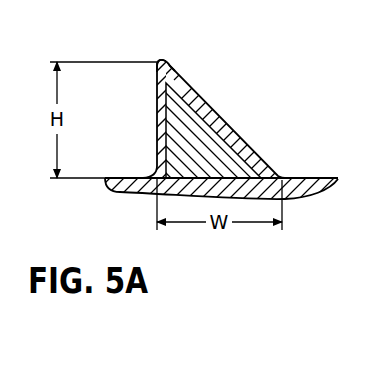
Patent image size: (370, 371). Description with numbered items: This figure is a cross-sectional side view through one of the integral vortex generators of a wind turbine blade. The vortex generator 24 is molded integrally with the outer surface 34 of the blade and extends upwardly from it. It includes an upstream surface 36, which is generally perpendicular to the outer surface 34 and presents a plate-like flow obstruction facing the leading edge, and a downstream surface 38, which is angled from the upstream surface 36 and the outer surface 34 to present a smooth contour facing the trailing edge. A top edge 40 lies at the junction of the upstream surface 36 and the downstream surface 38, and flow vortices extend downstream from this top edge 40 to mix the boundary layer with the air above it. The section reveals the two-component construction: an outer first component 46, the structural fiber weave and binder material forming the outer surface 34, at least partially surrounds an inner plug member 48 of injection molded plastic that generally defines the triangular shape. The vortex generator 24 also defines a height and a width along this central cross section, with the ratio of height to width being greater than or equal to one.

The vortex generator 24 is at (222, 93).
The outer surface 34 is at (302, 178).
The upstream surface 36 is at (157, 108).
The downstream surface 38 is at (230, 128).
The top edge 40 is at (161, 60).
The first component 46 is at (297, 197).
The plug member 48 is at (185, 137).